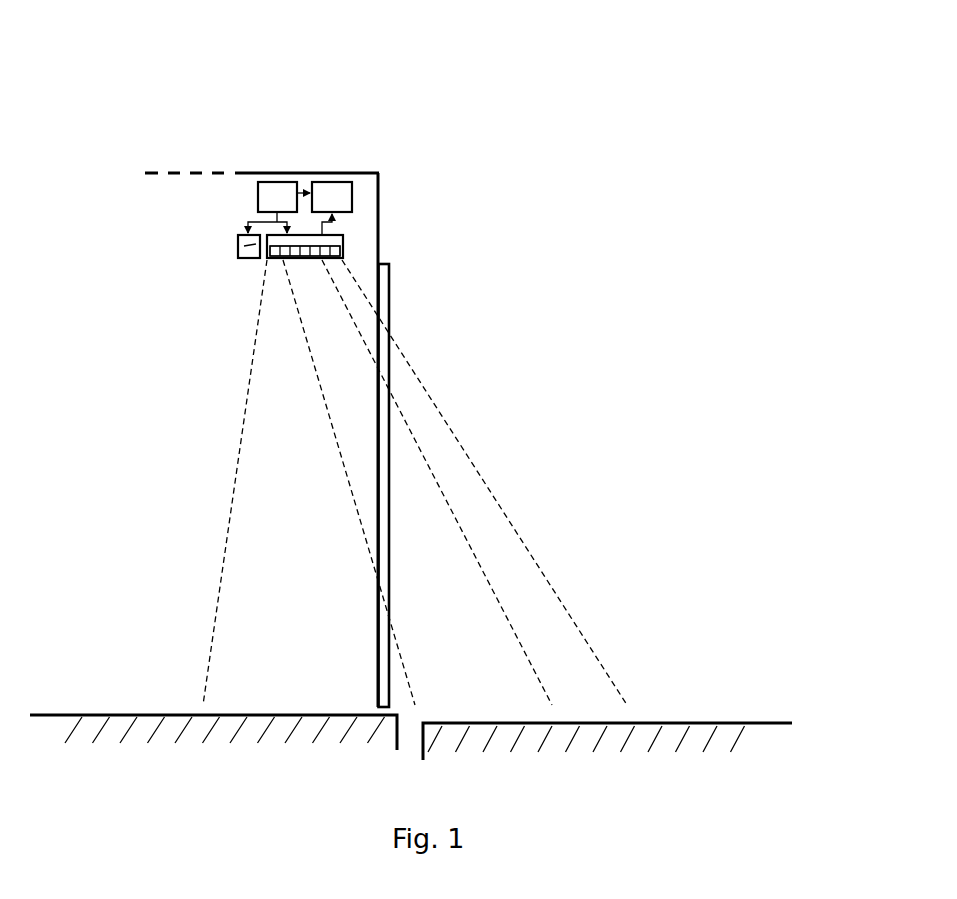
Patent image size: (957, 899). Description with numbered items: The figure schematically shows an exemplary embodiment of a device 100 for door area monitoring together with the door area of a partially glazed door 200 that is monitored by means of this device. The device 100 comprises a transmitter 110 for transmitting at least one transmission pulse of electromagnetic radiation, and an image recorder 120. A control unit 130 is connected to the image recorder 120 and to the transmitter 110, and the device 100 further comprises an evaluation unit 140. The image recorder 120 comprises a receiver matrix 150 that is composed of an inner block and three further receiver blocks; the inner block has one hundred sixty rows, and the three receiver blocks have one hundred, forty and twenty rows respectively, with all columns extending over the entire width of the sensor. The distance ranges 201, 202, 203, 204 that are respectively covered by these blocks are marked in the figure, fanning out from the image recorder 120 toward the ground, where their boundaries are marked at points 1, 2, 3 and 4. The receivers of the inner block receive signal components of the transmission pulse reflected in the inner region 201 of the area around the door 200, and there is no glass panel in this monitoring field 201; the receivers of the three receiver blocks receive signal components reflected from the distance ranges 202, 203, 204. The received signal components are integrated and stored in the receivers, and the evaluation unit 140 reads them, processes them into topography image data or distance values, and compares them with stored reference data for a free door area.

The device for door area monitoring 100 is at (490, 93).
The transmitter 110 is at (238, 248).
The image recorder 120 is at (345, 249).
The control unit 130 is at (258, 192).
The evaluation unit 140 is at (352, 193).
The receiver matrix 150 is at (287, 258).
The partially glazed door 200 is at (390, 313).
The inner region 201 is at (291, 643).
The first distance range 202 is at (443, 643).
The second distance range 203 is at (500, 643).
The third distance range 204 is at (562, 643).
The first ground point 1 is at (213, 719).
The second ground point 2 is at (607, 724).
The third ground point 3 is at (556, 705).
The fourth ground point 4 is at (630, 705).